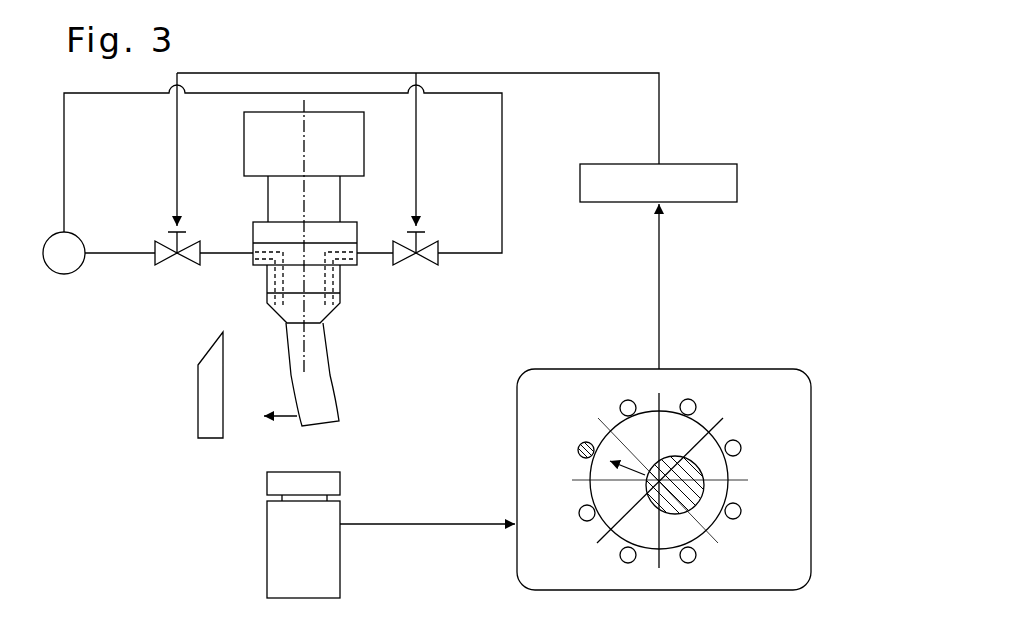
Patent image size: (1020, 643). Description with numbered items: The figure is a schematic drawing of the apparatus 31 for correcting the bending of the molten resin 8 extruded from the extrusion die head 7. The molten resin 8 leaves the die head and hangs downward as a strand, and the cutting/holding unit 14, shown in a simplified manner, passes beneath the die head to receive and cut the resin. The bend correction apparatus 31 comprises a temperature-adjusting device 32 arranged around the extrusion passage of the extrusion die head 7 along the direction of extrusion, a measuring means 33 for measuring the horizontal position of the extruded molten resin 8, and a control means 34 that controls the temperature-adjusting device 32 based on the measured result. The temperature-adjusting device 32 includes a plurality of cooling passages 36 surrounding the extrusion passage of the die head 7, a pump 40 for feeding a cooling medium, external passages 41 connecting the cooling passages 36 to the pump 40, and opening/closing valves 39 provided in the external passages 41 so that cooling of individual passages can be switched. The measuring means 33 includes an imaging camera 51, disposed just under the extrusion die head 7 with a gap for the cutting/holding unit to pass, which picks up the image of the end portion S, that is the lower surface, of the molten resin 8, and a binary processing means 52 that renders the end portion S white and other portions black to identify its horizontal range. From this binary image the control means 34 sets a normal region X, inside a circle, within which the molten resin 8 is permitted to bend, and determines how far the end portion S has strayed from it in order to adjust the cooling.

The extrusion die head 7 is at (357, 221).
The molten resin 8 is at (325, 404).
The cutting/holding unit 14 is at (212, 440).
The apparatus for correcting the bending of the molten resin 31 is at (675, 99).
The temperature-adjusting device 32 is at (110, 249).
The measuring means 33 is at (697, 443).
The control means 34 is at (708, 163).
The cooling passages 36 is at (341, 283).
The opening/closing valves 39 is at (164, 264).
The pump 40 is at (65, 275).
The external passages 41 is at (223, 256).
The imaging camera 51 is at (278, 537).
The binary processing means 52 is at (797, 405).
The normal region X is at (731, 467).
The end portion S is at (700, 504).